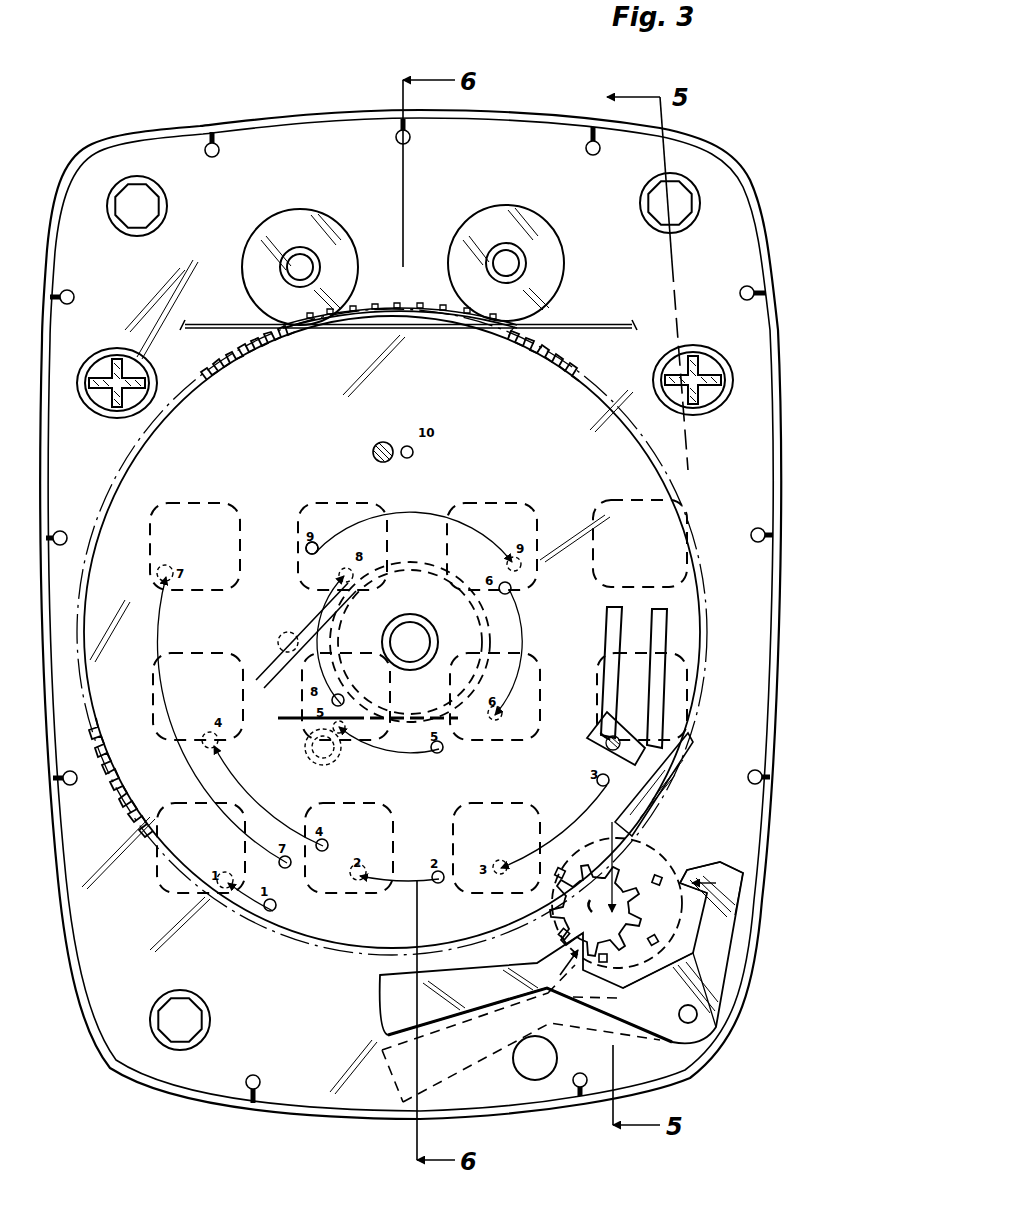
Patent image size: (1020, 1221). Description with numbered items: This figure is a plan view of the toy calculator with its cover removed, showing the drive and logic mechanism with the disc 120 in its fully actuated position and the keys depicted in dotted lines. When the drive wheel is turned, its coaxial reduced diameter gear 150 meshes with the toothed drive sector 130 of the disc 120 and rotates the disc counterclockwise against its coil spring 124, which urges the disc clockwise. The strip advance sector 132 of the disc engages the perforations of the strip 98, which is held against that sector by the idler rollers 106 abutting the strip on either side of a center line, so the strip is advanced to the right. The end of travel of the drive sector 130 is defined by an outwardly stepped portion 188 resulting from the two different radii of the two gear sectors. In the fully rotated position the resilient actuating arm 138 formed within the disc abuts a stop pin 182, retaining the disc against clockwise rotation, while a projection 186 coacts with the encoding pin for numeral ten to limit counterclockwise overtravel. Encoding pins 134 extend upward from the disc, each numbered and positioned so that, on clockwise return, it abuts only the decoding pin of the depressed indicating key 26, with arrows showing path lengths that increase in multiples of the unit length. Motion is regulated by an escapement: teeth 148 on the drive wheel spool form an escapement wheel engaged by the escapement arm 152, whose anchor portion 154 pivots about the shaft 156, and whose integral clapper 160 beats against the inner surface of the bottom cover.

The idler rollers 106 is at (330, 222).
The strip 98 is at (576, 324).
The strip advance sector 132 is at (230, 359).
The outwardly stepped portion 188 is at (506, 348).
The disc 120 is at (256, 452).
The projection 186 is at (383, 442).
The encoding pins 134 is at (414, 456).
The indicating key 26 is at (222, 502).
The coil spring 124 is at (300, 628).
The resilient actuating arm 138 is at (645, 682).
The stop pin 182 is at (642, 735).
The drive sector 130 is at (665, 806).
The gear 150 is at (657, 858).
The teeth 148 is at (552, 922).
The anchor portion 154 is at (738, 890).
The escapement arm 152 is at (728, 986).
The shaft 156 is at (697, 1018).
The clapper 160 is at (384, 1008).